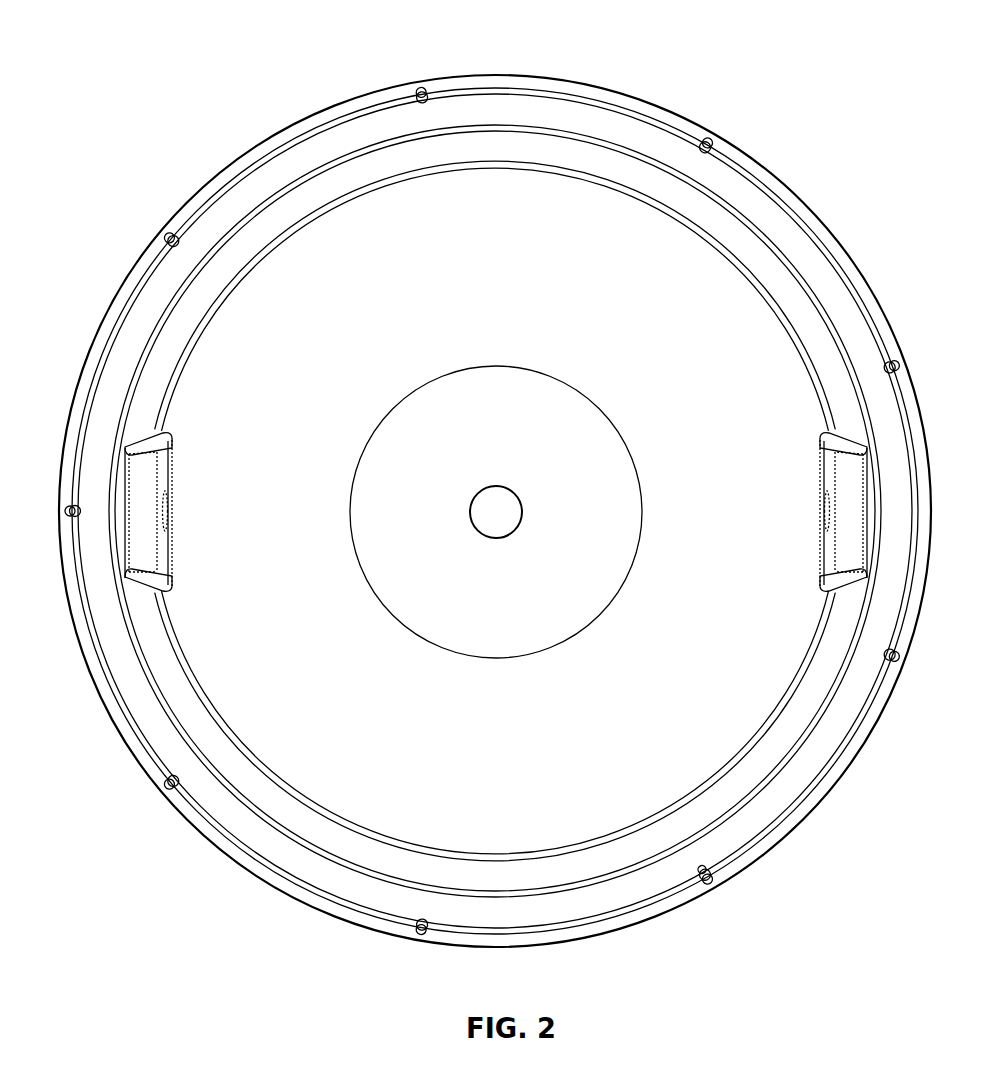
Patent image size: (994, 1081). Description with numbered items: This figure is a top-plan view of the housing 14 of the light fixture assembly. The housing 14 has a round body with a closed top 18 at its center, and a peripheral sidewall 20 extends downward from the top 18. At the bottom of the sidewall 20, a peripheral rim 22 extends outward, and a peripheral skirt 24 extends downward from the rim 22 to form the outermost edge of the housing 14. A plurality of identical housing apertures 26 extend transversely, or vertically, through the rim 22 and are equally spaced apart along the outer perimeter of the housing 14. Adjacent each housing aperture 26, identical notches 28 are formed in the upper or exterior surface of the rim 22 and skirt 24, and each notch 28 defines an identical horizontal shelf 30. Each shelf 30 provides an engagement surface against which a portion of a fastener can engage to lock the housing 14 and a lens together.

The housing 14 is at (152, 50).
The closed top 18 is at (514, 756).
The peripheral sidewall 20 is at (155, 378).
The peripheral rim 22 is at (95, 557).
The peripheral skirt 24 is at (105, 690).
The housing aperture 26 is at (172, 782).
The notch 28 is at (715, 866).
The horizontal shelf 30 is at (710, 888).